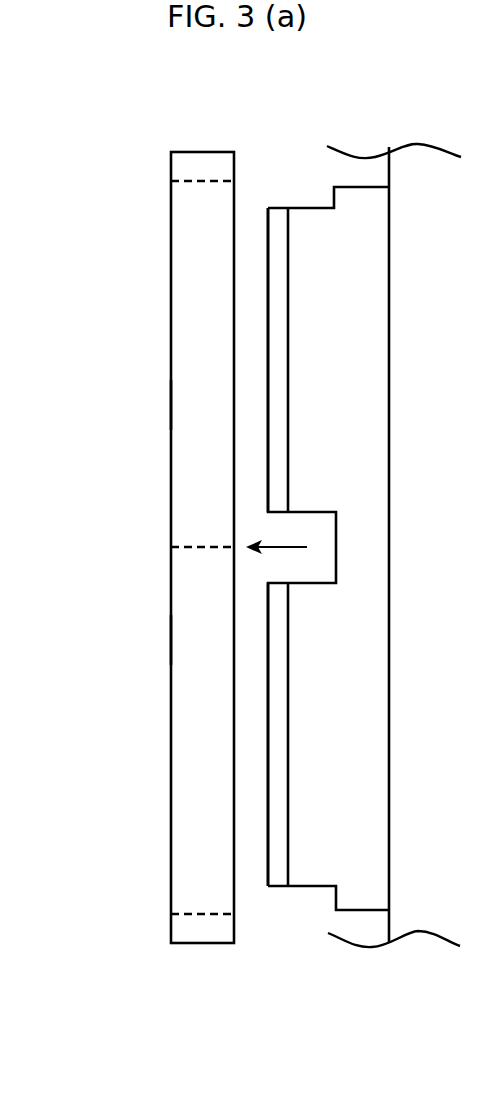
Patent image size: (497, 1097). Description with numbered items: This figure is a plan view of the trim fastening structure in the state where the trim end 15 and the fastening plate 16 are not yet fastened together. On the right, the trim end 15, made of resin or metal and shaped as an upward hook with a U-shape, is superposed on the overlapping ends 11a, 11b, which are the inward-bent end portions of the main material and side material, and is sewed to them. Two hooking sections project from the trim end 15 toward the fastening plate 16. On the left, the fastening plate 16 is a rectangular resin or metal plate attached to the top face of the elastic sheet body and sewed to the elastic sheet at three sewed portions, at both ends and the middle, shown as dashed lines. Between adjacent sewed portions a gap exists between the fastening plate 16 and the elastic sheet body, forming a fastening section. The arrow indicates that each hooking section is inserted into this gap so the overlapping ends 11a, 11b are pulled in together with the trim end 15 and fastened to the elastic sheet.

The overlapping end 11a is at (423, 907).
The overlapping end 11b is at (410, 973).
The trim end 15 is at (370, 663).
The fastening plate 16 is at (191, 796).